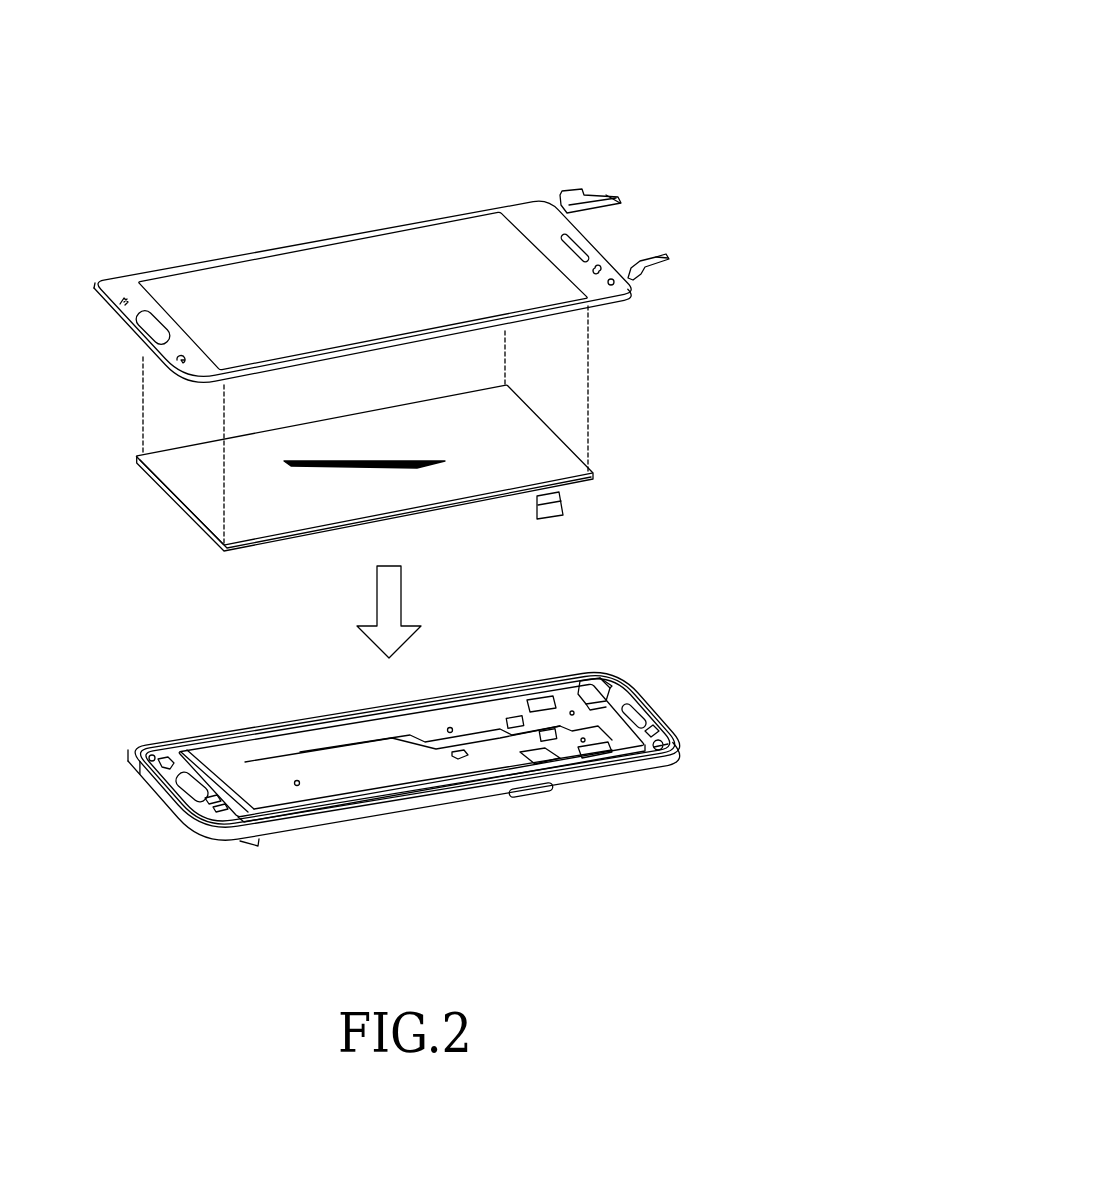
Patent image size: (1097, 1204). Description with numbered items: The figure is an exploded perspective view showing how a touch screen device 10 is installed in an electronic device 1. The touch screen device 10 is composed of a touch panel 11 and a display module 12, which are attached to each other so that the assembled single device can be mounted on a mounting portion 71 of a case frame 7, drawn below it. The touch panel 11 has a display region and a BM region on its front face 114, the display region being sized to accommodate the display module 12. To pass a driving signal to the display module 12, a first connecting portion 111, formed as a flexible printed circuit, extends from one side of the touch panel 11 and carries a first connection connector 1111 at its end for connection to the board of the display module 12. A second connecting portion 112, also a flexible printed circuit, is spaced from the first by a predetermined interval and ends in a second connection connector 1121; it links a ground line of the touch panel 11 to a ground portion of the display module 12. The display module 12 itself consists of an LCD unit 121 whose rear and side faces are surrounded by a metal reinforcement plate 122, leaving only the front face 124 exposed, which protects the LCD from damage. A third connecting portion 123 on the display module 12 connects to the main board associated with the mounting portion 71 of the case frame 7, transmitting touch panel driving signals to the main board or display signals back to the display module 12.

The electronic device 1 is at (803, 39).
The touch screen device 10 is at (430, 339).
The touch panel 11 is at (420, 238).
The front face 114 is at (451, 248).
The second connecting portion 112 is at (578, 193).
The second connection connector 1121 is at (625, 204).
The first connecting portion 111 is at (644, 262).
The first connection connector 1111 is at (676, 257).
The display module 12 is at (409, 444).
The LCD unit 121 is at (205, 493).
The reinforcement plate 122 is at (198, 522).
The third connecting portion 123 is at (563, 503).
The front face 124 is at (513, 425).
The case frame 7 is at (322, 817).
The mounting portion 71 is at (395, 775).